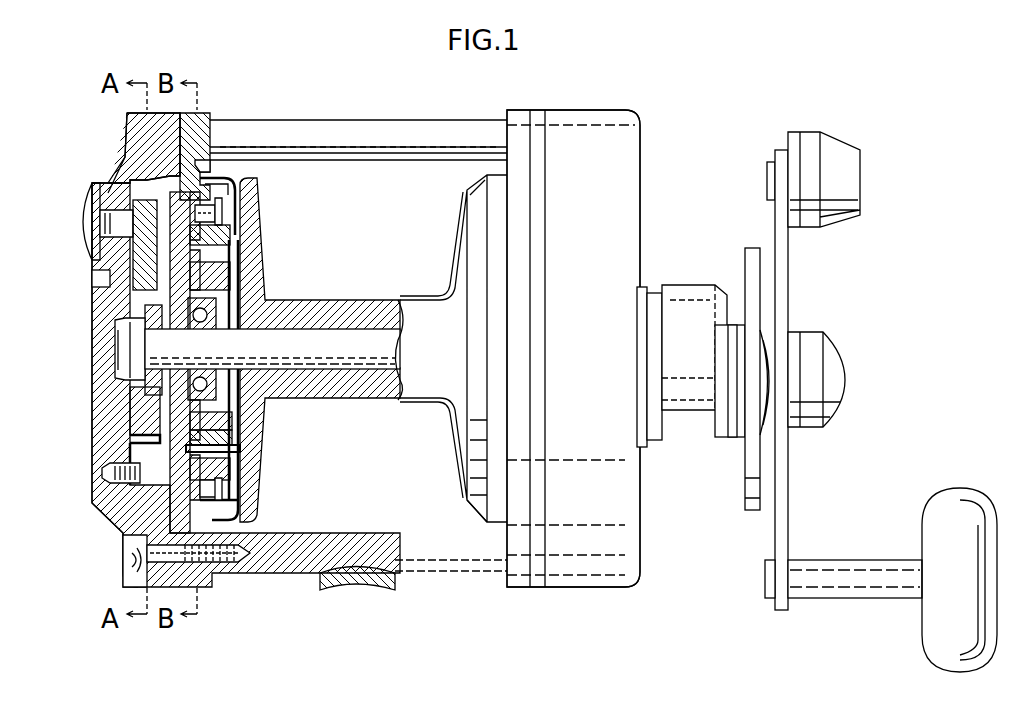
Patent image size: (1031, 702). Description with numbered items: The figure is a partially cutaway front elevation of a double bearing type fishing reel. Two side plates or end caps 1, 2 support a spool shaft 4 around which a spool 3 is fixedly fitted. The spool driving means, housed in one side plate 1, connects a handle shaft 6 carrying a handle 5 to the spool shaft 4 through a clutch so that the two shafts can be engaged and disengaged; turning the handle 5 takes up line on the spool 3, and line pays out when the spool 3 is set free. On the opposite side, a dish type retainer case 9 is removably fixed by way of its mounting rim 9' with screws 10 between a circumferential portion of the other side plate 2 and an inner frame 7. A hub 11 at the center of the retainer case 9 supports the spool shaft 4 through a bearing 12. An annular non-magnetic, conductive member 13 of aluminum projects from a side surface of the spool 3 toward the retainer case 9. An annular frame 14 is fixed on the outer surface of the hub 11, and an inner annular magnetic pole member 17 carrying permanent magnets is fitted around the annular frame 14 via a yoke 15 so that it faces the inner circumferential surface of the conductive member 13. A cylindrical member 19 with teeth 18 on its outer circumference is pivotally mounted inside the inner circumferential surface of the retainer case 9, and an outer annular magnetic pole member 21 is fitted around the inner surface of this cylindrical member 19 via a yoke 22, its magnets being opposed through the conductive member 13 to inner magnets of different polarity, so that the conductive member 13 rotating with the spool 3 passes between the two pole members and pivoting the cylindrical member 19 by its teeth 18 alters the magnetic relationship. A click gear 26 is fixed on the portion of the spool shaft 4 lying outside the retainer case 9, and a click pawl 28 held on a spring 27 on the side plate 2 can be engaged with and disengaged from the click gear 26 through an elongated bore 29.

The side plate 1 is at (575, 130).
The side plate 2 is at (130, 122).
The spool 3 is at (345, 307).
The spool shaft 4 is at (373, 335).
The handle 5 is at (782, 278).
The handle shaft 6 is at (823, 340).
The inner frame 7 is at (197, 117).
The retainer case 9 is at (239, 344).
The mounting rim 9' is at (234, 129).
The screws 10 is at (140, 548).
The hub 11 is at (247, 267).
The bearing 12 is at (218, 305).
The non-magnetic conductive member 13 is at (247, 257).
The annular frame 14 is at (220, 423).
The yoke 15 is at (225, 433).
The inner magnetic pole member 17 is at (230, 456).
The teeth 18 is at (220, 208).
The cylindrical member 19 is at (115, 512).
The outer magnetic pole member 21 is at (142, 435).
The yoke 22 is at (228, 472).
The click gear 26 is at (142, 318).
The spring 27 is at (135, 410).
The click pawl 28 is at (140, 263).
The elongated bore 29 is at (97, 282).